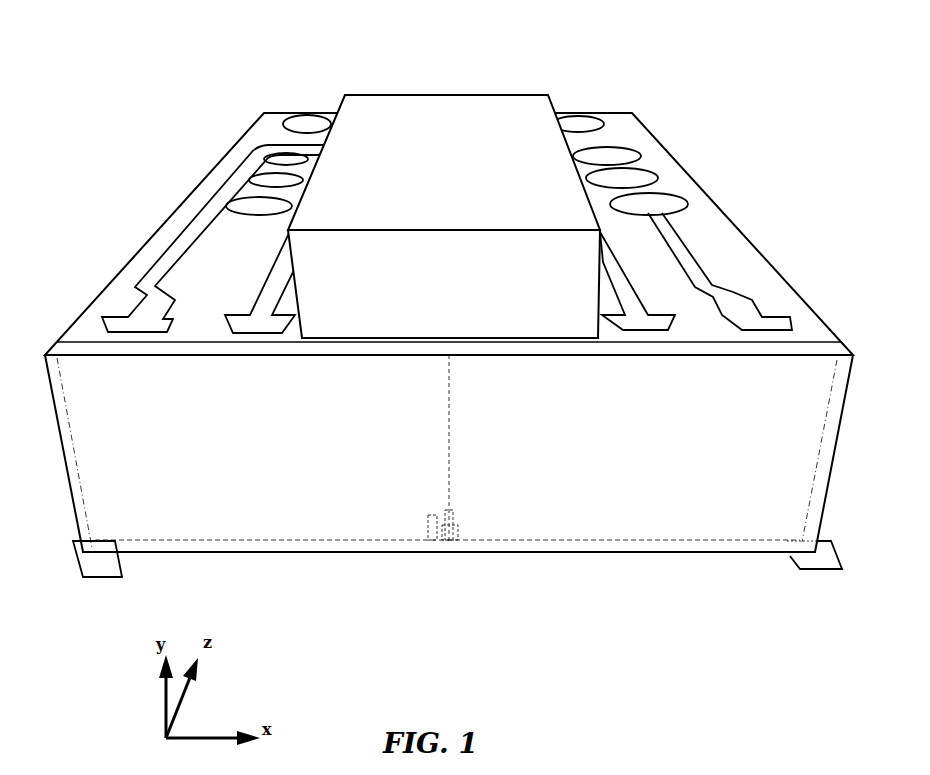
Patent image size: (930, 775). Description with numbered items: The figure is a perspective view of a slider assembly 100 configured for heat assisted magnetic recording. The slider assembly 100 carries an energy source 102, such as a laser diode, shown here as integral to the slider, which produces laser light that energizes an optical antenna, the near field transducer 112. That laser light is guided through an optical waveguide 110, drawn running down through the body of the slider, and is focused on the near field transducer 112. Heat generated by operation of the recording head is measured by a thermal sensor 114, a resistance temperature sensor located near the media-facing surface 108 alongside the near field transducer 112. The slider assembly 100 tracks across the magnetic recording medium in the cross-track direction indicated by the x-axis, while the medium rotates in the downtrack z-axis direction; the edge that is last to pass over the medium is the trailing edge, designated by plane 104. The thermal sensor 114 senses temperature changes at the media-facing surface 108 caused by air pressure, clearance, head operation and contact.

The slider assembly 100 is at (648, 52).
The energy source 102 is at (367, 94).
The trailing edge plane 104 is at (105, 577).
The media-facing surface 108 is at (833, 569).
The optical waveguide 110 is at (450, 430).
The near field transducer 112 is at (450, 540).
The thermal sensor 114 is at (432, 527).